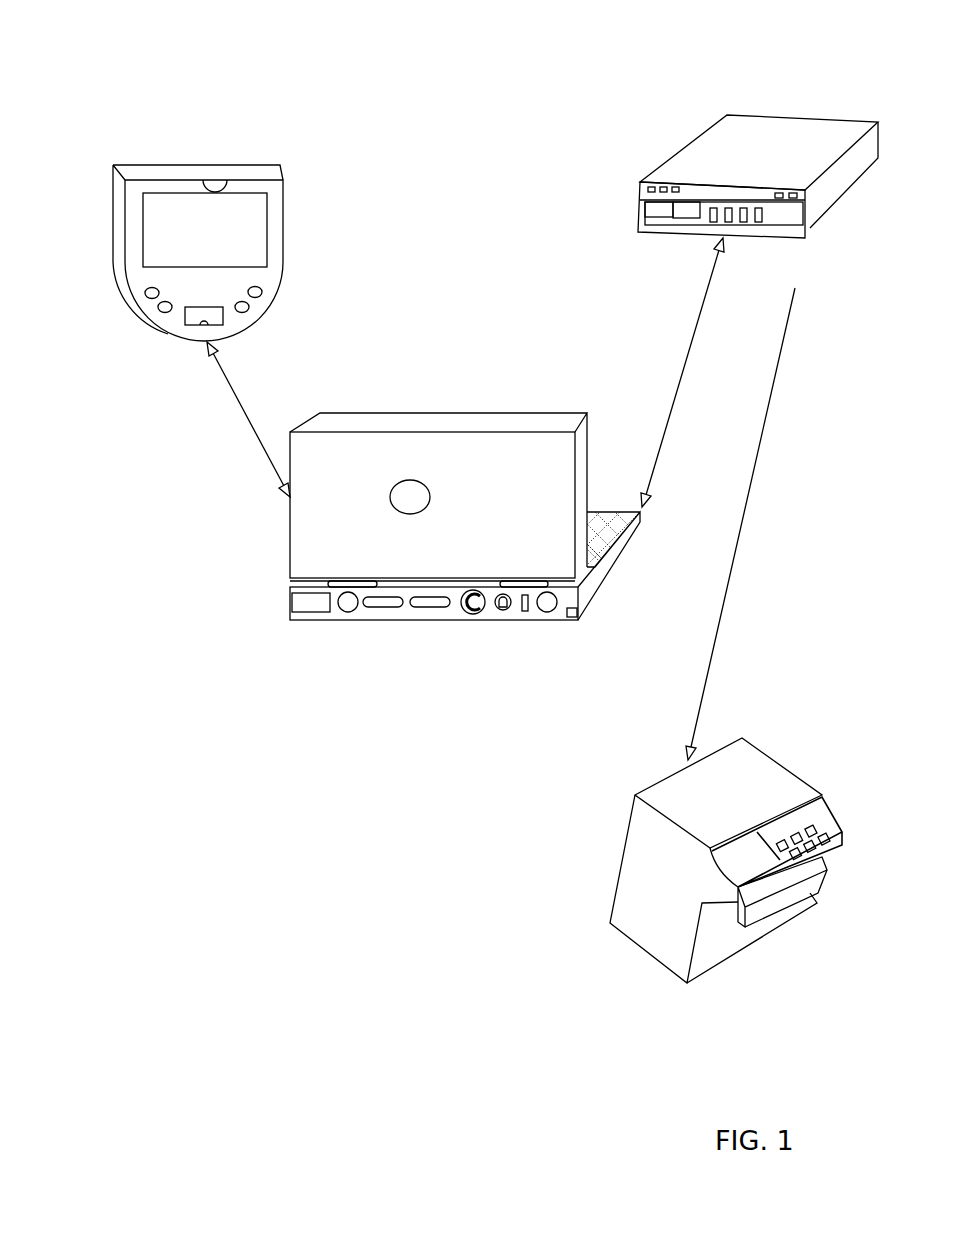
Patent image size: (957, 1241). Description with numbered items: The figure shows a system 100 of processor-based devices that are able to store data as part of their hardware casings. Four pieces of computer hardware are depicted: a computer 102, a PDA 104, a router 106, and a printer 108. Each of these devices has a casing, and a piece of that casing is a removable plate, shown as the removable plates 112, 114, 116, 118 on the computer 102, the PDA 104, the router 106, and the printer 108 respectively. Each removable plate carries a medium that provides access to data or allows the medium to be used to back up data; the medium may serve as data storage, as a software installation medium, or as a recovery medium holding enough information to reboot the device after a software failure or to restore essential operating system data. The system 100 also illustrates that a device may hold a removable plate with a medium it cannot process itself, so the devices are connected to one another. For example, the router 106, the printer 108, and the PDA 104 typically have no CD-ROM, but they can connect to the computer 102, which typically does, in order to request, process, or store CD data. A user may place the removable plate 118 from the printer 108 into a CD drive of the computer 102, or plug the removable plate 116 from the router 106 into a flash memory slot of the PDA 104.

The system 100 is at (367, 34).
The computer 102 is at (224, 523).
The PDA 104 is at (75, 95).
The router 106 is at (663, 99).
The printer 108 is at (555, 830).
The removable plate 112 is at (410, 467).
The removable plate 114 is at (174, 327).
The removable plate 116 is at (657, 219).
The removable plate 118 is at (710, 880).